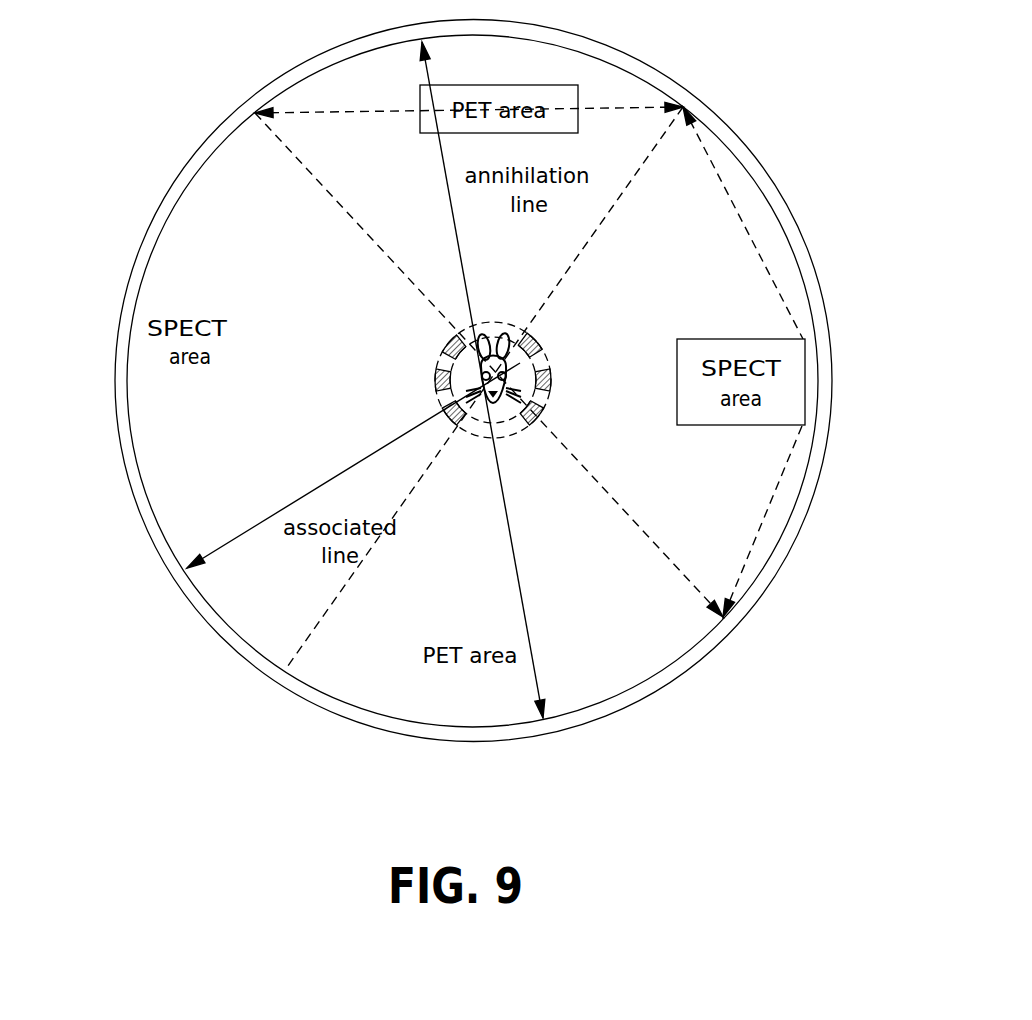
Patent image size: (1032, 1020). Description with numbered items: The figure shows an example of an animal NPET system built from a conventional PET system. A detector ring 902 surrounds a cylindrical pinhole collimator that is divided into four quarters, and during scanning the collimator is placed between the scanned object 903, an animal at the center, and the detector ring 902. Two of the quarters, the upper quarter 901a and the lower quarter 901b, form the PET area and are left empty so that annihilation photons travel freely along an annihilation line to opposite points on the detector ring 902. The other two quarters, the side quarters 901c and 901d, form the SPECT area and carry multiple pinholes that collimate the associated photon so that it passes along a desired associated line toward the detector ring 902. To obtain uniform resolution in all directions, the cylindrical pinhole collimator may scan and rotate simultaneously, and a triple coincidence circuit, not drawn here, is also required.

The upper quarter of cylindrical pinhole collimator 901a is at (495, 330).
The lower quarter of cylindrical pinhole collimator 901b is at (508, 430).
The pinhole quarter of cylindrical pinhole collimator 901c is at (552, 378).
The pinhole quarter of cylindrical pinhole collimator 901d is at (435, 378).
The detector ring 902 is at (833, 406).
The object 903 is at (520, 363).